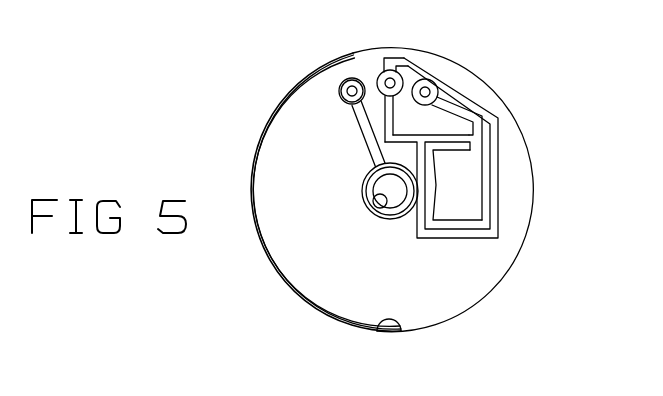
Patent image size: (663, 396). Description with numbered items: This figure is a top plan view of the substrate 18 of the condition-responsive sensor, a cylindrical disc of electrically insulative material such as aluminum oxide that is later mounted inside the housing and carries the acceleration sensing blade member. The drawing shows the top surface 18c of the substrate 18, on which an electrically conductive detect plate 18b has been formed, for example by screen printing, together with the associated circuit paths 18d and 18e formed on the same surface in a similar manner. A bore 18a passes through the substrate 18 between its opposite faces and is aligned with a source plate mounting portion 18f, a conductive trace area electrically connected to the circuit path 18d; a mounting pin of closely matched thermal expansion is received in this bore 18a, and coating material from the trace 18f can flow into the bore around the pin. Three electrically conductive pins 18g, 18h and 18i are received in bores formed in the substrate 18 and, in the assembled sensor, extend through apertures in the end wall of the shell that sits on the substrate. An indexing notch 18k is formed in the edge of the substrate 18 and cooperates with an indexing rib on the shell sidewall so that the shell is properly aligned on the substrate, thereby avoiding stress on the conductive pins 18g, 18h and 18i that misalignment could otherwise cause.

The substrate 18 is at (521, 111).
The bore 18a is at (381, 205).
The detect plate 18b is at (470, 178).
The top surface 18c is at (312, 280).
The circuit path 18d is at (364, 136).
The circuit path 18e is at (460, 238).
The source plate mounting portion 18f is at (370, 183).
The electrically conductive pin 18g is at (340, 90).
The electrically conductive pin 18h is at (387, 75).
The electrically conductive pin 18i is at (428, 85).
The indexing notch 18k is at (398, 325).